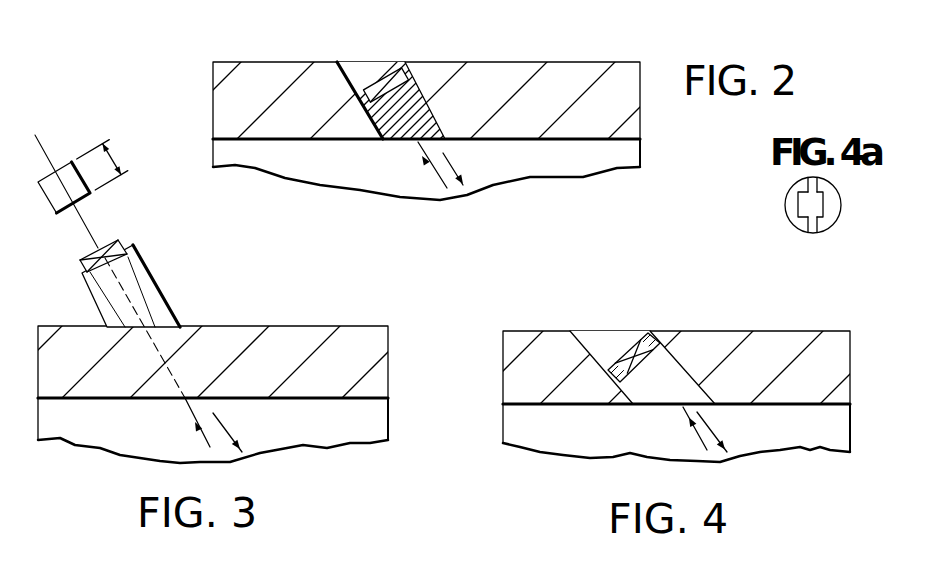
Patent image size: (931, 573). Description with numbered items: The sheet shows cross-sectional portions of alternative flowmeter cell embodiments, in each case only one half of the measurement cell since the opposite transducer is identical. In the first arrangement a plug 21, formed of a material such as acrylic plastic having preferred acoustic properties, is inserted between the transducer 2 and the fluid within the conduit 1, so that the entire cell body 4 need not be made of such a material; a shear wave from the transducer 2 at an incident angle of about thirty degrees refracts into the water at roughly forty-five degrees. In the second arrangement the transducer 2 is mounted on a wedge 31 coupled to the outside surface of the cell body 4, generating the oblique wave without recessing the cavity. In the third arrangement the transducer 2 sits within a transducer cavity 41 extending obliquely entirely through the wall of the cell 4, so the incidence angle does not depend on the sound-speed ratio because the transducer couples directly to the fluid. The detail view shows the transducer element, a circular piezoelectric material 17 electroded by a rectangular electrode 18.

In FIG. 2, the conduit 1 is at (613, 163).
In FIG. 3, the conduit 1 is at (55, 423).
In FIG. 4, the conduit 1 is at (522, 425).
In FIG. 2, the transducer 2 is at (374, 84).
In FIG. 3, the transducer 2 is at (61, 168).
In FIG. 4, the transducer 2 is at (617, 360).
In FIG. 2, the cell body 4 is at (527, 62).
In FIG. 3, the cell body 4 is at (317, 326).
In FIG. 4, the cell body 4 is at (681, 367).
In FIG. 2, the plug 21 is at (410, 80).
In FIG. 3, the wedge 31 is at (158, 303).
In FIG. 4, the transducer cavity 41 is at (681, 365).
In FIG. 4a, the piezoelectric material 17 is at (829, 202).
In FIG. 4a, the rectangular electrode 18 is at (818, 211).